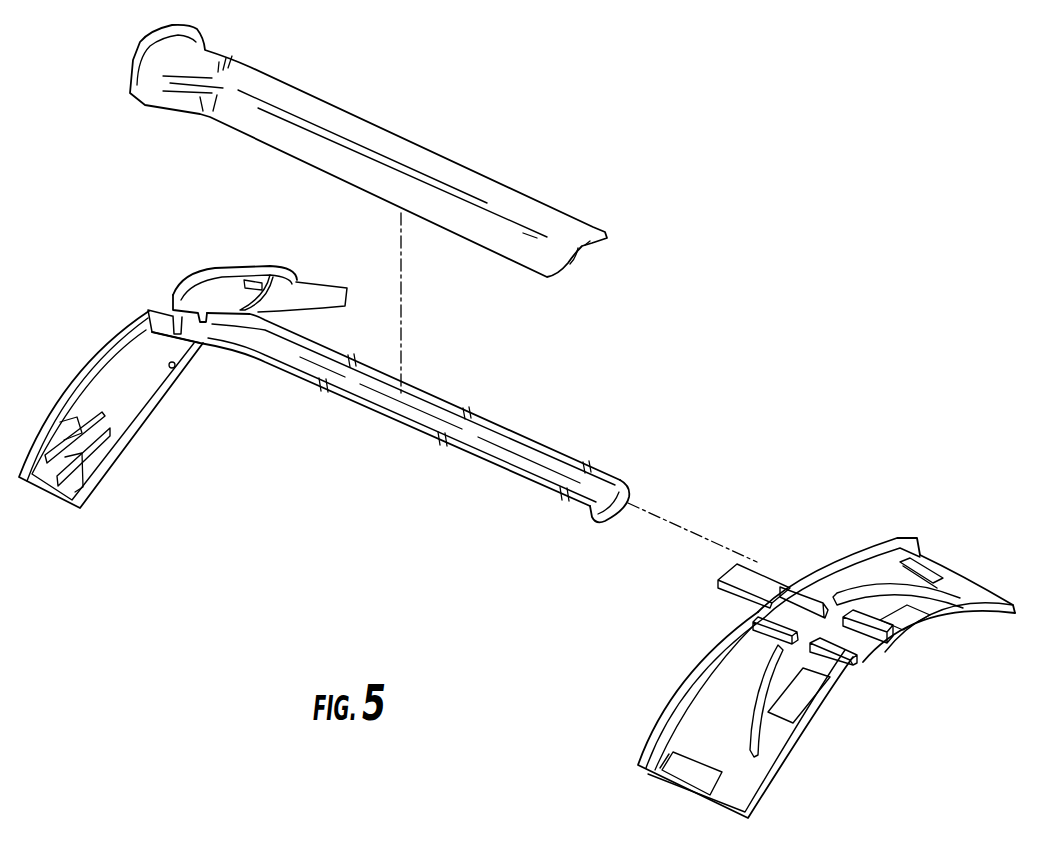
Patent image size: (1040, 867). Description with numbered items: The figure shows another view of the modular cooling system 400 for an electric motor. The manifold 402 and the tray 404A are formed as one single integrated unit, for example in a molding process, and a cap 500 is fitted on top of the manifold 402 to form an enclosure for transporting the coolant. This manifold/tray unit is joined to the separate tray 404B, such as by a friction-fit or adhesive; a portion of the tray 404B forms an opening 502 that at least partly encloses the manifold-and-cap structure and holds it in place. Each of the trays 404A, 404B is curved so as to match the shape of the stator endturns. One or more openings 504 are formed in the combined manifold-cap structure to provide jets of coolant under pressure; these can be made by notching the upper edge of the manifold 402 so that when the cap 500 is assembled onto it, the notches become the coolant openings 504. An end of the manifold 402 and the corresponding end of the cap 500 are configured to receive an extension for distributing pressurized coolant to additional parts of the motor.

The cooling system 400 is at (517, 515).
The manifold 402 is at (280, 370).
The tray 404A is at (200, 278).
The tray 404B is at (797, 745).
The cap 500 is at (440, 155).
The opening 502 is at (875, 662).
The opening 504 is at (558, 505).